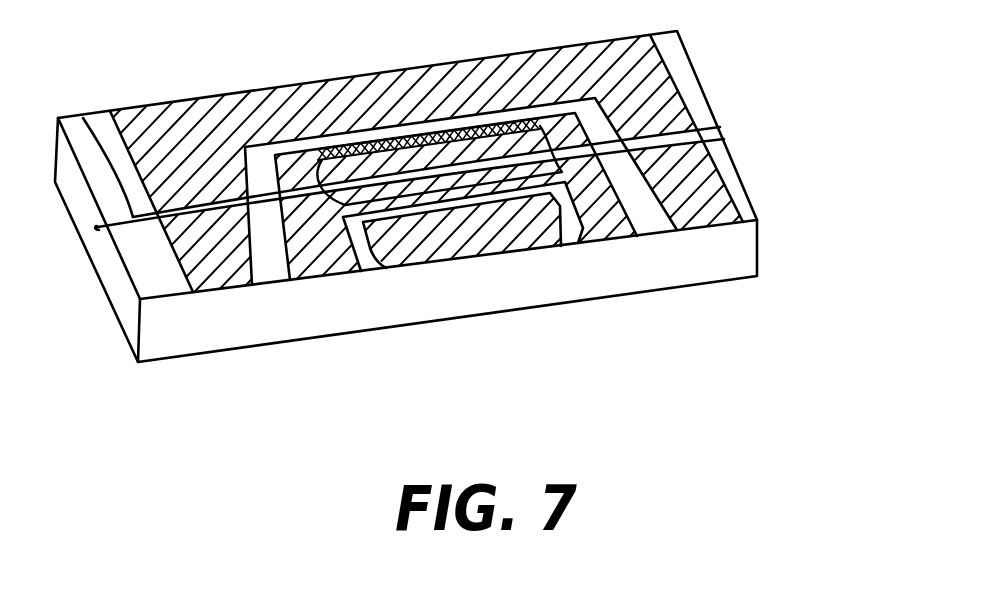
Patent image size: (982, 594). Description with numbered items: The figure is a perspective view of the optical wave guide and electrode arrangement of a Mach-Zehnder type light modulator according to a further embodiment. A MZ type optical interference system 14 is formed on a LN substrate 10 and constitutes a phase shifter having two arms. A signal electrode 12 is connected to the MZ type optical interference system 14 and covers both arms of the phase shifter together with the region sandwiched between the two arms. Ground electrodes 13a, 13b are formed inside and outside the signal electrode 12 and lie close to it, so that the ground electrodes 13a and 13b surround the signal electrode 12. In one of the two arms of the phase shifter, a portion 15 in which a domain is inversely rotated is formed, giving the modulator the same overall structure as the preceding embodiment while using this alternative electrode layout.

The LN substrate 10 is at (643, 278).
The signal electrode 12 is at (605, 114).
The ground electrode 13a is at (480, 248).
The ground electrode 13b is at (686, 195).
The MZ type optical interference system 14 is at (90, 132).
The portion in which a domain is inversely rotated 15 is at (365, 157).